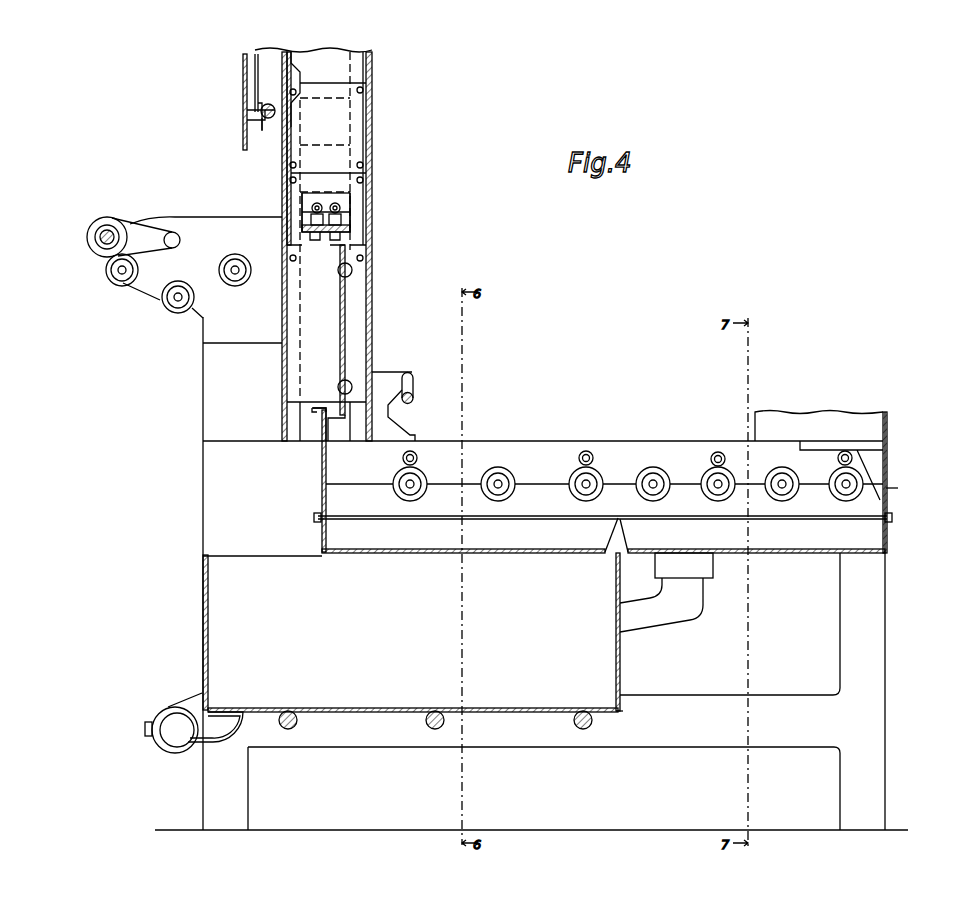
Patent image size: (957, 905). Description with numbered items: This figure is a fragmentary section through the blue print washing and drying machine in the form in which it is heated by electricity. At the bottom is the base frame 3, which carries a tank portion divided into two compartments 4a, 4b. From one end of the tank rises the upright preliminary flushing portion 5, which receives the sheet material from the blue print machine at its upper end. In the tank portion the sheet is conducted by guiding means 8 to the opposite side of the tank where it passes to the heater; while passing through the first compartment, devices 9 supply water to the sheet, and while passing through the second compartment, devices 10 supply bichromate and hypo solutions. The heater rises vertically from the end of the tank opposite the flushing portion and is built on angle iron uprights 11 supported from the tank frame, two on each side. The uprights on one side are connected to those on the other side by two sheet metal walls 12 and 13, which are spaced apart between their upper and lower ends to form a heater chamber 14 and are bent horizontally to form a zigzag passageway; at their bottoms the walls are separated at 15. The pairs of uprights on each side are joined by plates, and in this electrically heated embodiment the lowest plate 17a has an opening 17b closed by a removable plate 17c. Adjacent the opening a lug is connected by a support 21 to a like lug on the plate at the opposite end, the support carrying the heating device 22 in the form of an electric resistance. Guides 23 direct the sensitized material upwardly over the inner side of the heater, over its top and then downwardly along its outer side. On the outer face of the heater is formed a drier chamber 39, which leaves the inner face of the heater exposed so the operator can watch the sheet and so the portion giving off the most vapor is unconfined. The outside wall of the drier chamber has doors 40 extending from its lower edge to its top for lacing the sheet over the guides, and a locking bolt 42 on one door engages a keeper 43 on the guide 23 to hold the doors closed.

The base frame 3 is at (648, 738).
The compartment 4a is at (803, 542).
The compartment 4b is at (398, 542).
The preliminary flushing portion 5 is at (870, 423).
The guiding means 8 is at (421, 471).
The devices 9 is at (718, 451).
The device 10 is at (412, 451).
The angle iron uprights 11 is at (290, 418).
The wall 12 is at (368, 149).
The wall 13 is at (285, 162).
The heater chamber 14 is at (340, 115).
The separation of the walls 15 is at (313, 246).
The lowest plate 17a is at (360, 205).
The opening 17b is at (348, 197).
The removable plate 17c is at (303, 200).
The support 21 is at (347, 230).
The heating device 22 is at (305, 212).
The guides 23 is at (270, 120).
The drier chamber 39 is at (268, 73).
The doors 40 is at (247, 92).
The locking bolt 42 is at (258, 106).
The keeper 43 is at (258, 124).